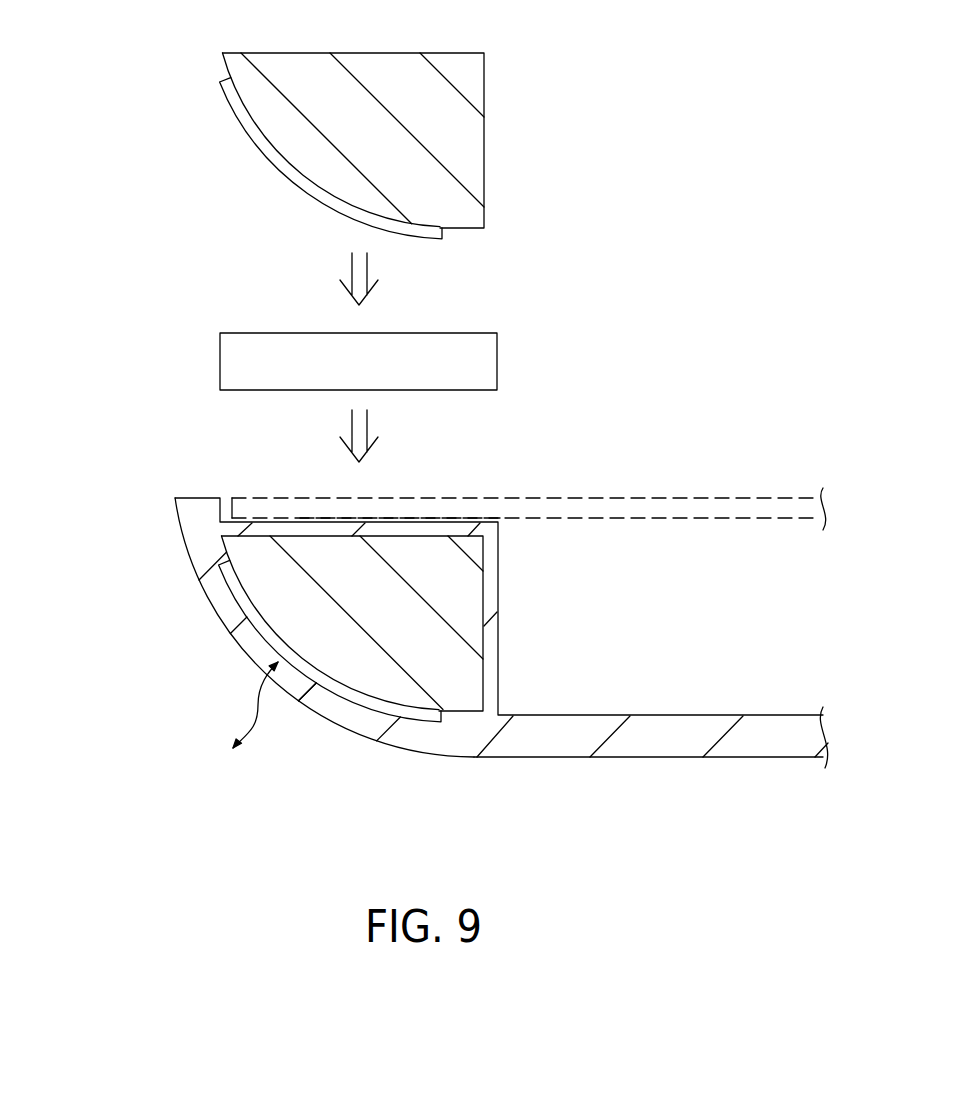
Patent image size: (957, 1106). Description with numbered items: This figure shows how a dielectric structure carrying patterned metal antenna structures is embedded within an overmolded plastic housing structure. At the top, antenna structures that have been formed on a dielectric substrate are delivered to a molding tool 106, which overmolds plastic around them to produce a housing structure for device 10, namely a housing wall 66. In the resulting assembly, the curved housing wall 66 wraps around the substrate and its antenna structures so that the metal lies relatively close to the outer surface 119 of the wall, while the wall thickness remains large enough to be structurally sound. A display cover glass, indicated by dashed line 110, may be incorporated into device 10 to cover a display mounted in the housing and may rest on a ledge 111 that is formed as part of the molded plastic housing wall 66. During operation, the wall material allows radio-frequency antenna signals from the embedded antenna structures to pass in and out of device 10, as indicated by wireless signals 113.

The device 10 is at (117, 492).
The housing wall 66 is at (300, 693).
The molding tool 106 is at (498, 365).
The display cover glass 110 is at (640, 507).
The ledge 111 is at (405, 520).
The wireless signals 113 is at (257, 720).
The outer surface 119 is at (331, 727).